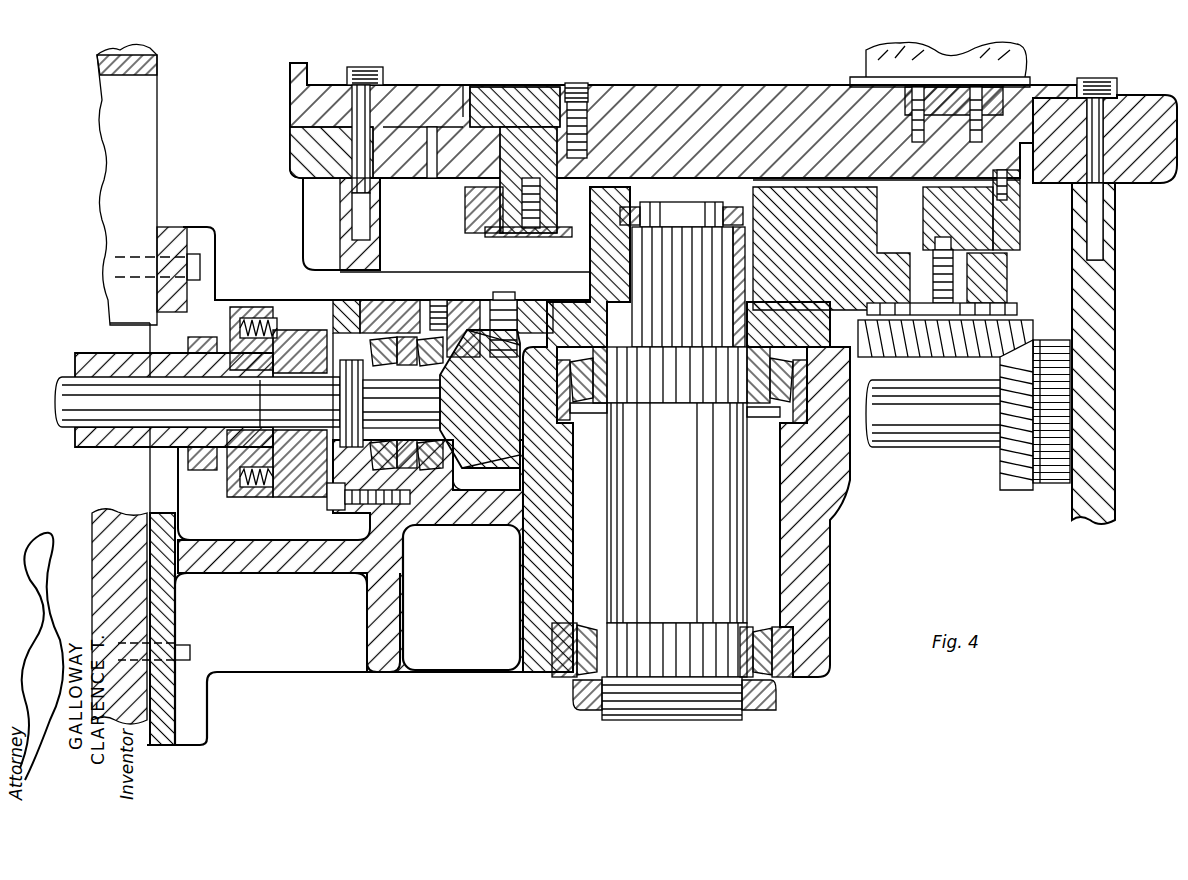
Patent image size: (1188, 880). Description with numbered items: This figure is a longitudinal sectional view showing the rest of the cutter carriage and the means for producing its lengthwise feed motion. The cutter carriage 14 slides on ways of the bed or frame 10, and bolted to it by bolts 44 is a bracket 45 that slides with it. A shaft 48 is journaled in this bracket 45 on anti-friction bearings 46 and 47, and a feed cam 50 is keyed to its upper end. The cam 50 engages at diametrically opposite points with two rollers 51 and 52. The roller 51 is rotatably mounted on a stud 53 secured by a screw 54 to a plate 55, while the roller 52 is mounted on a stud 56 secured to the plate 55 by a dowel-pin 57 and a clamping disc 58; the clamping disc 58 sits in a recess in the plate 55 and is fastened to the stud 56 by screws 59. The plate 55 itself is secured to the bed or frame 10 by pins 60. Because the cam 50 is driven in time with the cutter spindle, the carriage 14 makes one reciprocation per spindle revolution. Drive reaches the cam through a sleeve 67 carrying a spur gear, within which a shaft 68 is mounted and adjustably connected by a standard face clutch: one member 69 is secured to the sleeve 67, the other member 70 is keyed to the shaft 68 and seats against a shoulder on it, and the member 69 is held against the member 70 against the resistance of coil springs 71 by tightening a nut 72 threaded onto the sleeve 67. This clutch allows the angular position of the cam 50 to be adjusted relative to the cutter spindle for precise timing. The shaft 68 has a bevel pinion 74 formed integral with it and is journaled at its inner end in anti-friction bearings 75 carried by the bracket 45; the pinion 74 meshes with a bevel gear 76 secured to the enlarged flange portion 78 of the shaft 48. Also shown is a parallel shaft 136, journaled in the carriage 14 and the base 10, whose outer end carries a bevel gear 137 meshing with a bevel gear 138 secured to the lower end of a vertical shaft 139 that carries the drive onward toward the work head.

The bed or frame 10 is at (1115, 478).
The cutter carriage 14 is at (132, 522).
The bolts 44 is at (188, 646).
The bracket 45 is at (452, 672).
The anti-friction bearing 46 is at (845, 390).
The anti-friction bearing 47 is at (800, 650).
The shaft 48 is at (732, 530).
The feed cam 50 is at (862, 232).
The roller 51 is at (470, 210).
The roller 52 is at (1000, 278).
The stud 53 is at (528, 92).
The screw 54 is at (586, 84).
The plate 55 is at (700, 92).
The stud 56 is at (1015, 222).
The dowel-pin 57 is at (1008, 193).
The clamping disc 58 is at (1015, 87).
The screws 59 is at (920, 128).
The pins 60 is at (356, 66).
The sleeve 67 is at (100, 445).
The shaft 68 is at (60, 375).
The clutch member 69 is at (228, 497).
The clutch member 70 is at (280, 497).
The coil springs 71 is at (242, 497).
The nut 72 is at (197, 470).
The bevel pinion 74 is at (482, 448).
The anti-friction bearings 75 is at (425, 512).
The bevel gear 76 is at (478, 300).
The enlarged flange portion 78 is at (570, 305).
The shaft 136 is at (950, 438).
The bevel gear 137 is at (1024, 428).
The bevel gear 138 is at (1018, 330).
The vertical shaft 139 is at (868, 58).